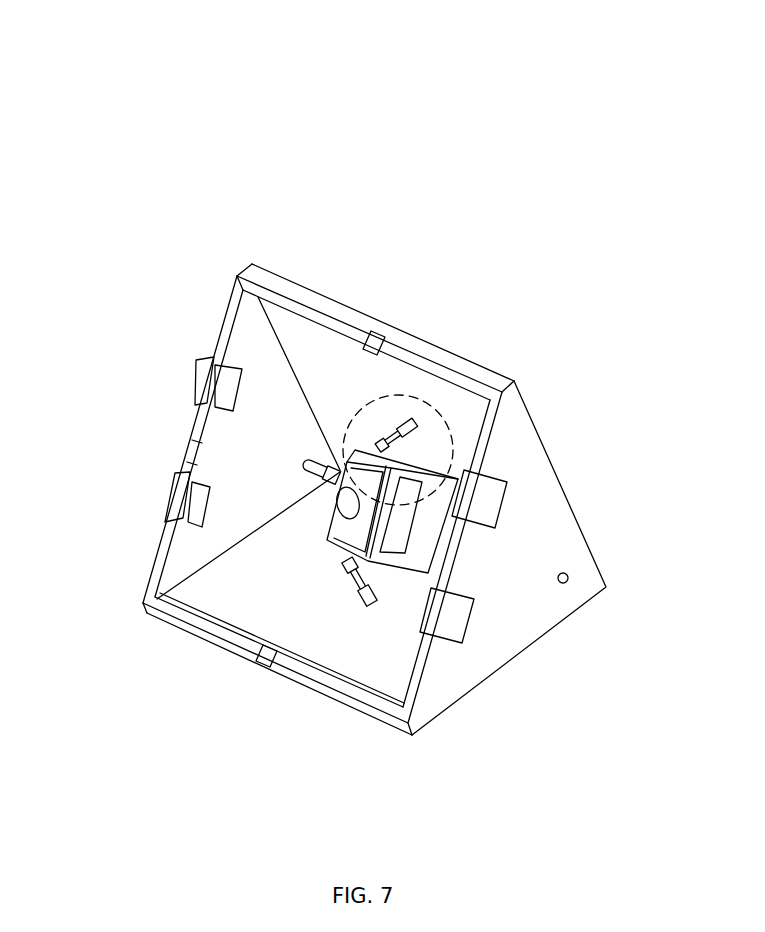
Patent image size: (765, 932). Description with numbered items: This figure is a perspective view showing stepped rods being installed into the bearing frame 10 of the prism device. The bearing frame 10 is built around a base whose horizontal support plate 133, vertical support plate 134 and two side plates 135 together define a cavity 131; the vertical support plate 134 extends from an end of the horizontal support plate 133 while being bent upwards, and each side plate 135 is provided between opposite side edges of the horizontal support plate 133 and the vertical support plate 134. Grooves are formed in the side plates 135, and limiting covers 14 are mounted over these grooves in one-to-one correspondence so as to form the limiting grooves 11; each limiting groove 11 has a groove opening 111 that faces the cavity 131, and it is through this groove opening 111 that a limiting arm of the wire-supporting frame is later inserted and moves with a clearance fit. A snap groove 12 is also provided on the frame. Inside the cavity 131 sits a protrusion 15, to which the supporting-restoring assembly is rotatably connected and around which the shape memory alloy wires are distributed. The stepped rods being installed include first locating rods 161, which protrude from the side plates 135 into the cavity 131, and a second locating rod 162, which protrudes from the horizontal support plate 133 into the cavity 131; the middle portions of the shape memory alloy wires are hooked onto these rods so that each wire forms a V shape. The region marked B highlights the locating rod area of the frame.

The bearing frame 10 is at (462, 48).
The limiting groove 11 is at (225, 377).
The snap groove 12 is at (377, 331).
The limiting cover 14 is at (202, 395).
The protrusion 15 is at (433, 549).
The cavity 131 is at (295, 347).
The horizontal support plate 133 is at (355, 690).
The vertical support plate 134 is at (478, 373).
The side plate 135 is at (555, 545).
The first locating rod 161 is at (303, 463).
The second locating rod 162 is at (372, 605).
The groove opening 111 is at (200, 525).
The region B is at (400, 393).